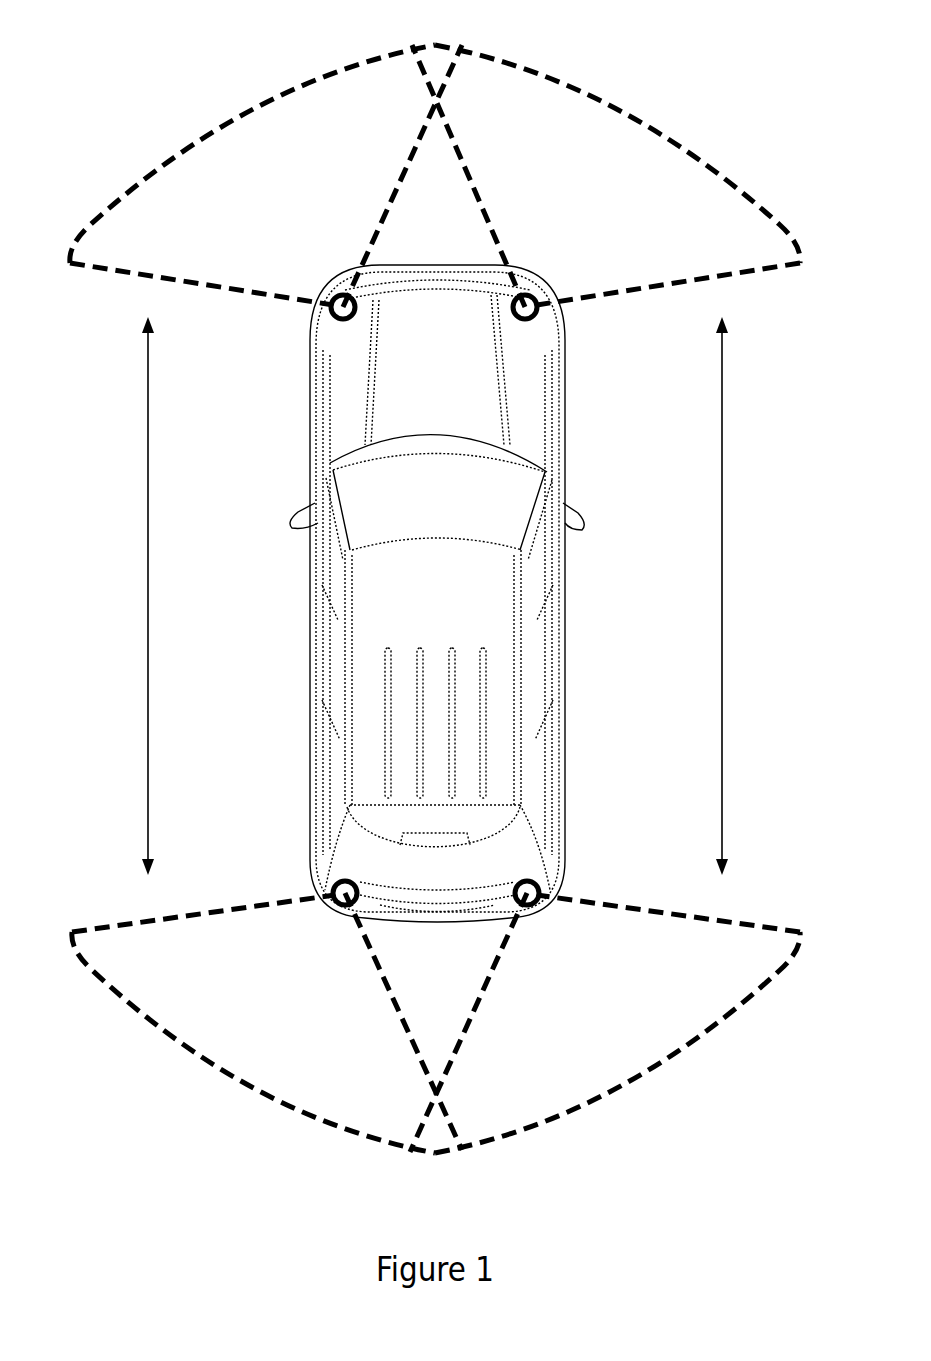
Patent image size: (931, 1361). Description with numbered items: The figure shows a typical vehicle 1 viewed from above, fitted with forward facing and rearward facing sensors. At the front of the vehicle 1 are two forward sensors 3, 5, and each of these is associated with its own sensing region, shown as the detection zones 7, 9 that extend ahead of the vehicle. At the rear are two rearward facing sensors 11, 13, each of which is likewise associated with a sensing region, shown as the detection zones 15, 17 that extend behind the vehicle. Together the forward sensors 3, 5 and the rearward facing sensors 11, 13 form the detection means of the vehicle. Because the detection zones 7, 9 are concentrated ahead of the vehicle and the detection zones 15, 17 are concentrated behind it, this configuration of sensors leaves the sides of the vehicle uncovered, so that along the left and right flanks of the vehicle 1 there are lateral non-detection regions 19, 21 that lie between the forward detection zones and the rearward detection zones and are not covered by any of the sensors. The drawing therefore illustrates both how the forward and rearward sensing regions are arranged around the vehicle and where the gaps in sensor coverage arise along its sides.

The vehicle 1 is at (286, 408).
The forward sensor 3 is at (332, 290).
The forward sensor 5 is at (535, 293).
The detection zone 7 is at (228, 117).
The detection zone 9 is at (575, 83).
The rearward facing sensor 11 is at (337, 907).
The rearward facing sensor 13 is at (535, 907).
The detection zone 15 is at (167, 1040).
The detection zone 17 is at (717, 1040).
The lateral non-detection region 19 is at (126, 596).
The lateral non-detection region 21 is at (742, 596).